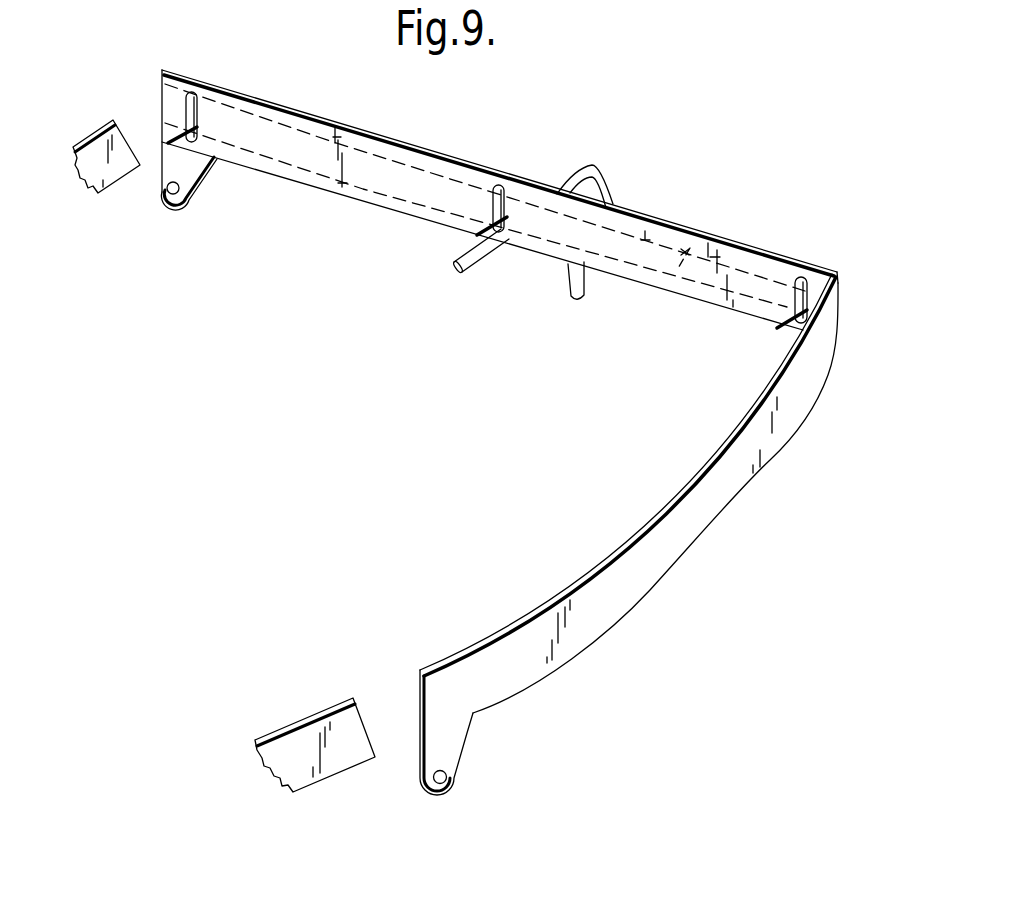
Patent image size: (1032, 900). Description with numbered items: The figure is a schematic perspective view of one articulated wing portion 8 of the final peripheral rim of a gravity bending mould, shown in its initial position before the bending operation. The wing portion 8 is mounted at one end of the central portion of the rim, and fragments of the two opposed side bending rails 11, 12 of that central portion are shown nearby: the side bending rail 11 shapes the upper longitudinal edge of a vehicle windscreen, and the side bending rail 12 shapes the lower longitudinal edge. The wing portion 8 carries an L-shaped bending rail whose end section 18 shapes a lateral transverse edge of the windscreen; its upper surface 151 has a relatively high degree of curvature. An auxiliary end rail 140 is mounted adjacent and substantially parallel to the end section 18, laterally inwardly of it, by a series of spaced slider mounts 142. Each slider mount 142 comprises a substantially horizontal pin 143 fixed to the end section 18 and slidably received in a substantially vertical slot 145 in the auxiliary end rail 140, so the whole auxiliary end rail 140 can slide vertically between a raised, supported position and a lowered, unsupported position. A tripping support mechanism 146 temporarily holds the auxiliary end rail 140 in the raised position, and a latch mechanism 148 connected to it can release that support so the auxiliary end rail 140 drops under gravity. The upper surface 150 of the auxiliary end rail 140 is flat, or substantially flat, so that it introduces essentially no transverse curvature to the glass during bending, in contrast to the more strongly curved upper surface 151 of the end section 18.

The wing portion 8 is at (647, 582).
The side bending rail 11 is at (95, 157).
The side bending rail 12 is at (340, 760).
The end section 18 is at (735, 241).
The auxiliary end rail 140 is at (458, 157).
The slider mount 142 is at (195, 158).
The pin 143 is at (178, 139).
The slot 145 is at (200, 112).
The tripping support mechanism 146 is at (483, 262).
The latch mechanism 148 is at (612, 183).
The upper surface of the auxiliary end rail 150 is at (367, 132).
The upper surface of the end section 151 is at (653, 224).